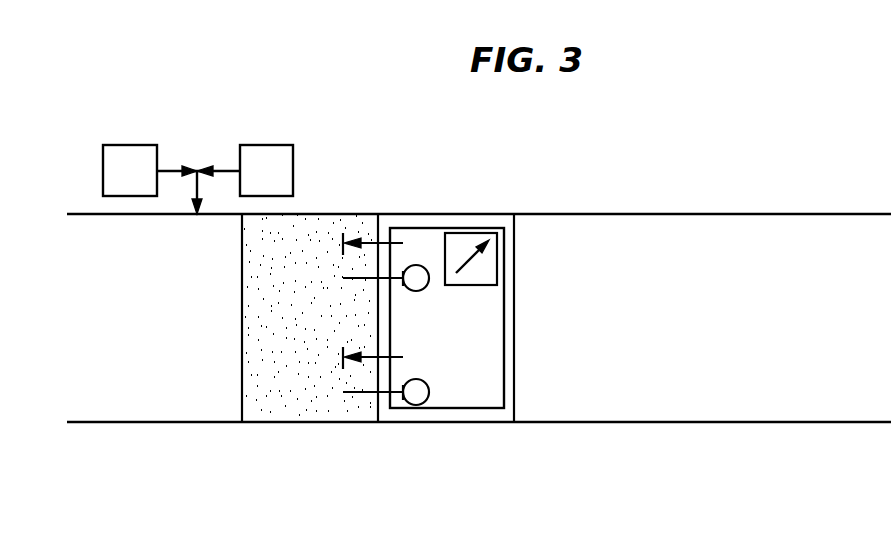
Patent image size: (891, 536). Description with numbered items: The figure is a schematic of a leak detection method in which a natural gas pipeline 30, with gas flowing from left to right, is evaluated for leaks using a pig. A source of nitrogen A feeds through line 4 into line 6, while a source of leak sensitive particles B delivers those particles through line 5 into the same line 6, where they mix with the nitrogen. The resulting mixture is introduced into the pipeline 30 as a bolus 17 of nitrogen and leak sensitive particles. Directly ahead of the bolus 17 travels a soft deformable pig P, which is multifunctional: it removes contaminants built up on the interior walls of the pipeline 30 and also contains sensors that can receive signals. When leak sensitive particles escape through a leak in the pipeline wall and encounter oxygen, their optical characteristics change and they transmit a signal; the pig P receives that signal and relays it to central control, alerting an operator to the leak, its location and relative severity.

The line 4 is at (188, 159).
The line 5 is at (208, 159).
The line 6 is at (205, 193).
The bolus 17 is at (294, 318).
The pipeline 30 is at (676, 214).
The soft deformable pig P is at (441, 228).
The source of nitrogen A is at (118, 170).
The source of leak sensitive particles B is at (278, 170).